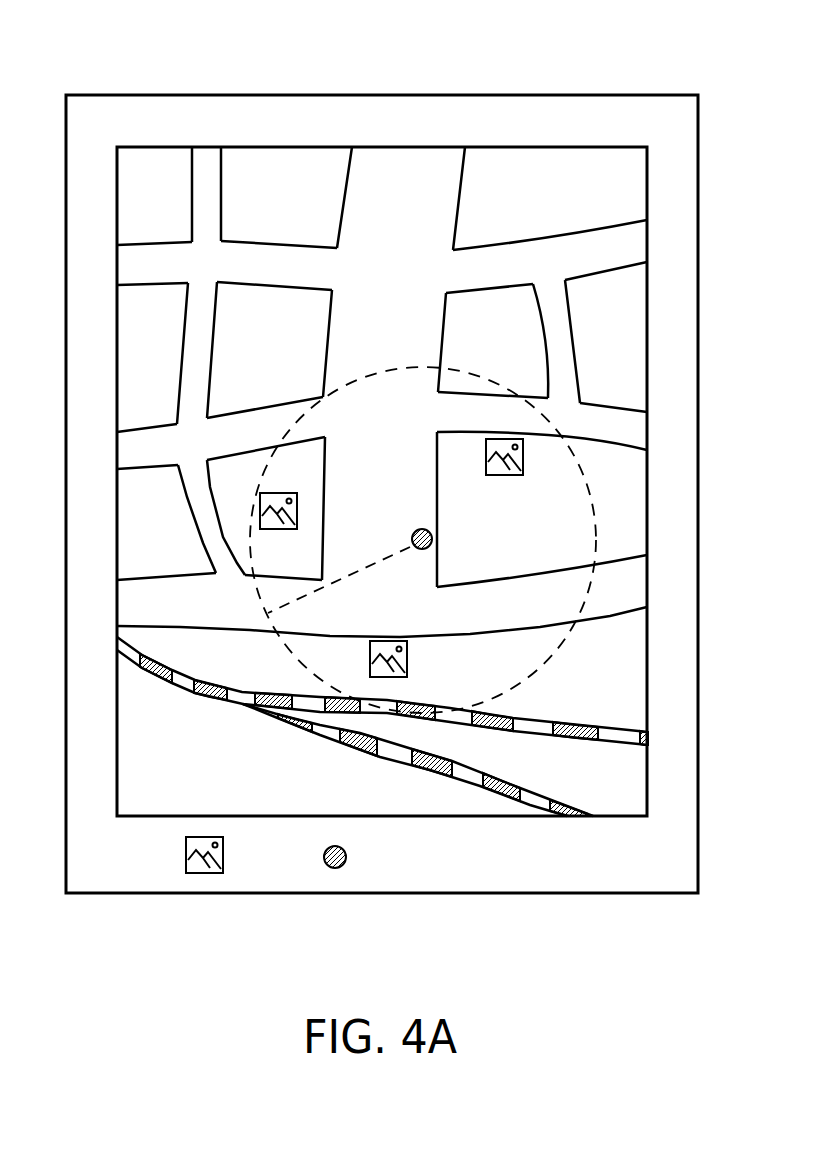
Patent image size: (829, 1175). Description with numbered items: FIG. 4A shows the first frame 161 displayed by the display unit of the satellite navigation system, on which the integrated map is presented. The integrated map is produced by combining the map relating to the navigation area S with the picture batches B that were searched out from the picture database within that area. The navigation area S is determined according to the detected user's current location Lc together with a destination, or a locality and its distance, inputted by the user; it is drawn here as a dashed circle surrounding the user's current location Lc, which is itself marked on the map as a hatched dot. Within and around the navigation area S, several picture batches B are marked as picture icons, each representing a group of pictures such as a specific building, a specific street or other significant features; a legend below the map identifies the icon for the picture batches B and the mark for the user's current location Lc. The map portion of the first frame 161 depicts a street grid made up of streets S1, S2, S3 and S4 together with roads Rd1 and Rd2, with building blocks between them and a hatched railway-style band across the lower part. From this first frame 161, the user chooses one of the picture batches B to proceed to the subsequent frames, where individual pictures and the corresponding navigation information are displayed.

The first frame 161 is at (757, 42).
The street S1 is at (211, 361).
The street S2 is at (382, 256).
The street S3 is at (558, 341).
The street S4 is at (382, 430).
The road Rd1 is at (393, 367).
The road Rd2 is at (382, 596).
The navigation area S is at (596, 533).
The picture batches B is at (354, 656).
The user's current location Lc is at (378, 700).